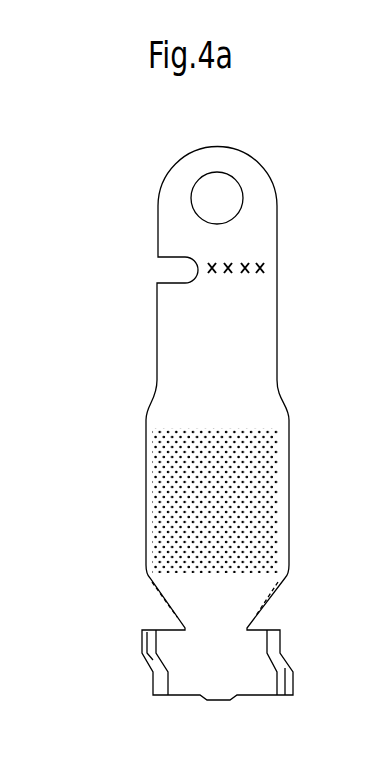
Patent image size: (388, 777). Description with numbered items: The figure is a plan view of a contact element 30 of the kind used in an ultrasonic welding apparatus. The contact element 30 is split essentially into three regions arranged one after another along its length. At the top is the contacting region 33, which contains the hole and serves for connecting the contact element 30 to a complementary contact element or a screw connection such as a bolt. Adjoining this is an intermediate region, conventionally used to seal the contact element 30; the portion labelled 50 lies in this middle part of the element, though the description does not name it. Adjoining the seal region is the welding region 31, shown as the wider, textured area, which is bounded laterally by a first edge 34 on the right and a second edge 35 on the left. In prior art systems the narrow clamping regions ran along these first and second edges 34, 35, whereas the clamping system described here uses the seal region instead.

The contact element 30 is at (302, 140).
The contacting region 33 is at (187, 220).
The body section with marking 50 is at (216, 352).
The welding region 31 is at (198, 503).
The second edge 35 is at (147, 540).
The first edge 34 is at (288, 528).